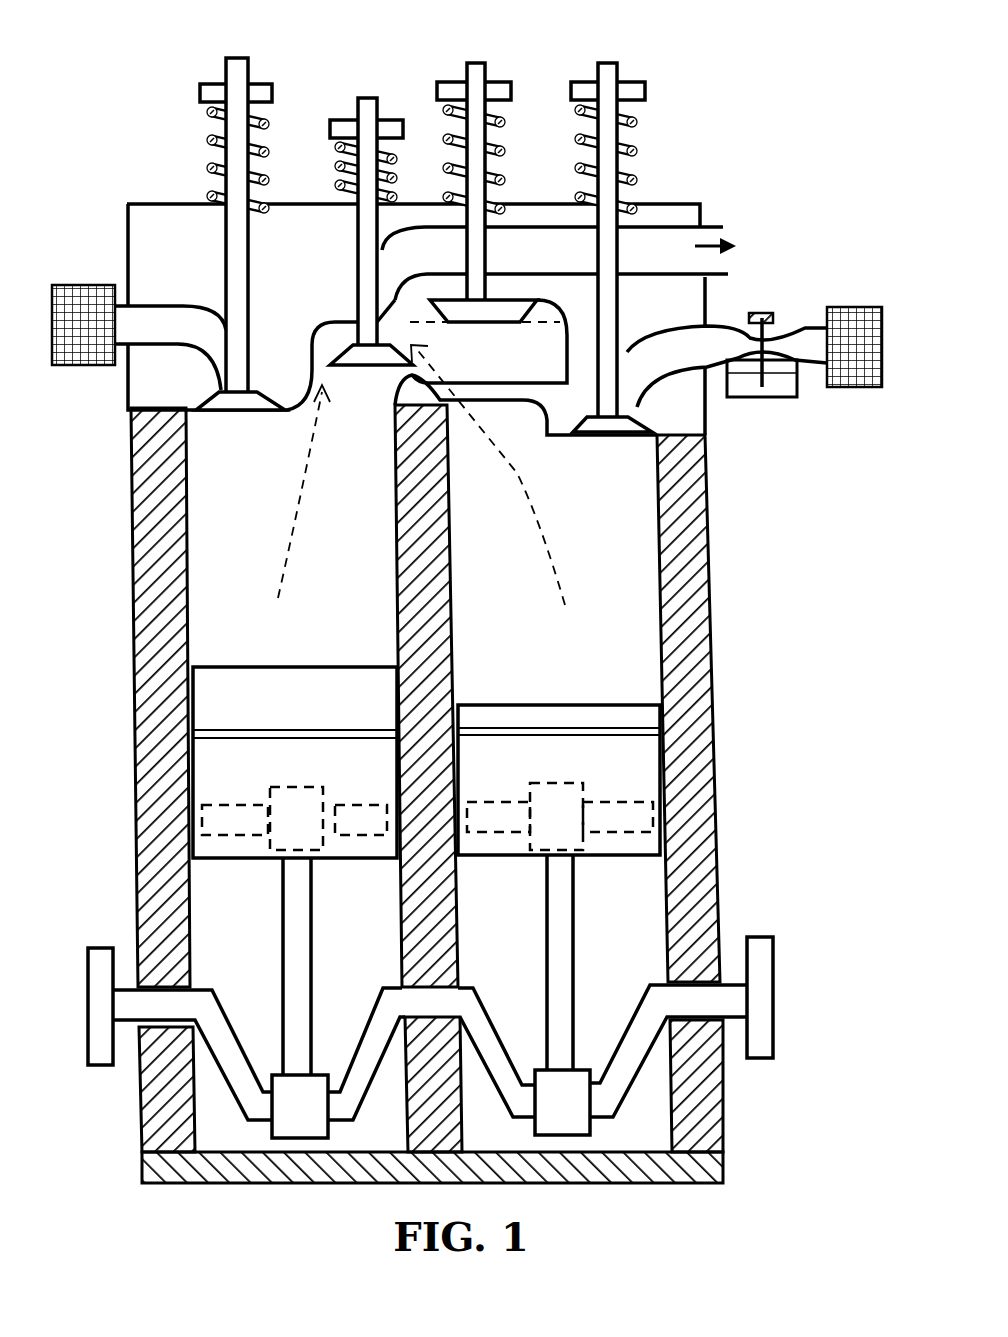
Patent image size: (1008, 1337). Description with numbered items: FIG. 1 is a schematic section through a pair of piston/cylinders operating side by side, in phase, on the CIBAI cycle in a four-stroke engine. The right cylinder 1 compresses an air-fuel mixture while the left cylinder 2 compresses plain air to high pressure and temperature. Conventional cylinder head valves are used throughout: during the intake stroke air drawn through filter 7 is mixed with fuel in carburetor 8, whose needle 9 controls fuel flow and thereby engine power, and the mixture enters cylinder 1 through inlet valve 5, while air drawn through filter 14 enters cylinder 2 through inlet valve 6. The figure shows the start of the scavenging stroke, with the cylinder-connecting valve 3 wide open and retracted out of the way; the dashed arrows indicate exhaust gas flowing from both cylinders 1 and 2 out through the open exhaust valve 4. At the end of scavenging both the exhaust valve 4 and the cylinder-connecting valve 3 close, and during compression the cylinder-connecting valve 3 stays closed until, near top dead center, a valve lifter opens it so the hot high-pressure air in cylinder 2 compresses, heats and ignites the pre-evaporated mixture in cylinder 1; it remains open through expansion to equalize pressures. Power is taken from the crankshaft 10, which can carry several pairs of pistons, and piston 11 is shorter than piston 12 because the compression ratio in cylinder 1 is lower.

The cylinder 1 is at (590, 540).
The cylinder 2 is at (207, 562).
The cylinder-connecting valve 3 is at (473, 113).
The exhaust valve 4 is at (367, 107).
The inlet valve 5 is at (630, 90).
The inlet valve 6 is at (215, 95).
The filter 7 is at (855, 307).
The carburetor 8 is at (732, 345).
The needle 9 is at (762, 310).
The crankshaft 10 is at (757, 1000).
The piston 11 is at (633, 780).
The piston 12 is at (215, 700).
The filter 14 is at (97, 283).